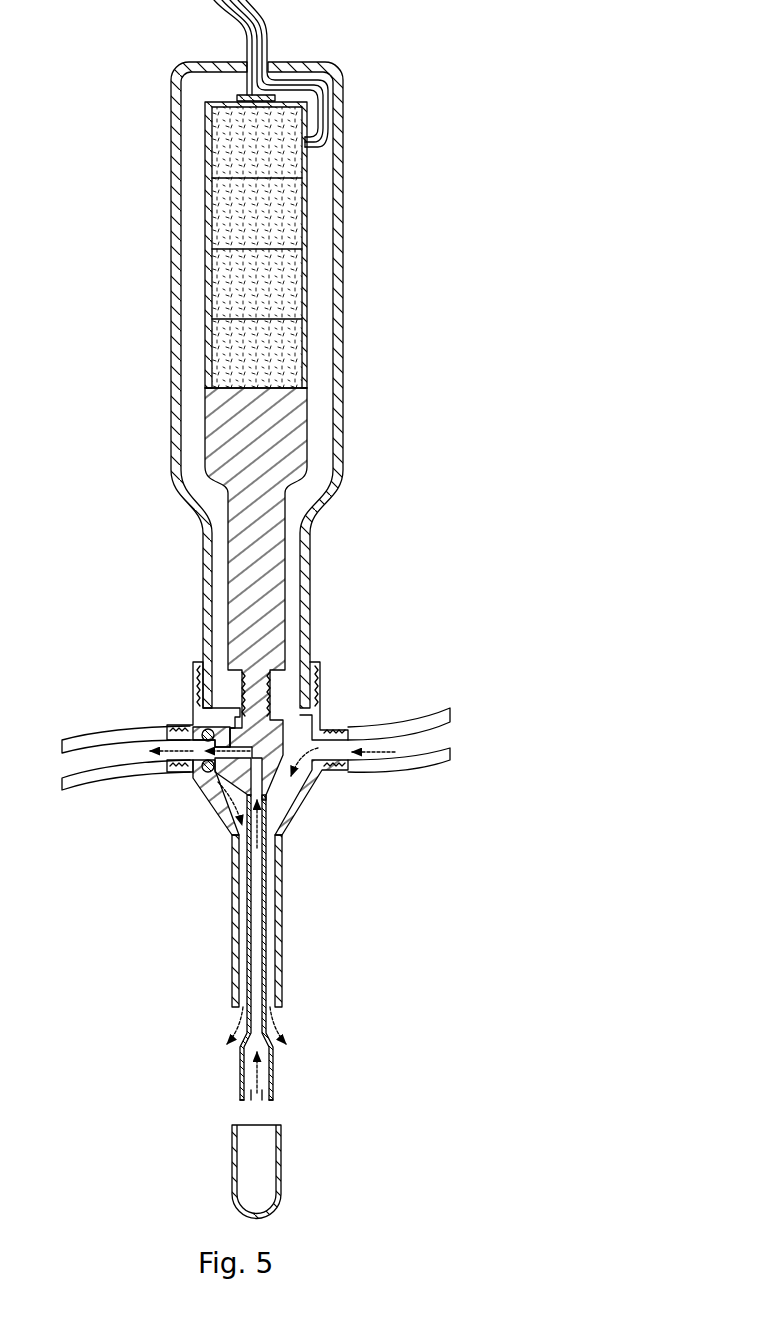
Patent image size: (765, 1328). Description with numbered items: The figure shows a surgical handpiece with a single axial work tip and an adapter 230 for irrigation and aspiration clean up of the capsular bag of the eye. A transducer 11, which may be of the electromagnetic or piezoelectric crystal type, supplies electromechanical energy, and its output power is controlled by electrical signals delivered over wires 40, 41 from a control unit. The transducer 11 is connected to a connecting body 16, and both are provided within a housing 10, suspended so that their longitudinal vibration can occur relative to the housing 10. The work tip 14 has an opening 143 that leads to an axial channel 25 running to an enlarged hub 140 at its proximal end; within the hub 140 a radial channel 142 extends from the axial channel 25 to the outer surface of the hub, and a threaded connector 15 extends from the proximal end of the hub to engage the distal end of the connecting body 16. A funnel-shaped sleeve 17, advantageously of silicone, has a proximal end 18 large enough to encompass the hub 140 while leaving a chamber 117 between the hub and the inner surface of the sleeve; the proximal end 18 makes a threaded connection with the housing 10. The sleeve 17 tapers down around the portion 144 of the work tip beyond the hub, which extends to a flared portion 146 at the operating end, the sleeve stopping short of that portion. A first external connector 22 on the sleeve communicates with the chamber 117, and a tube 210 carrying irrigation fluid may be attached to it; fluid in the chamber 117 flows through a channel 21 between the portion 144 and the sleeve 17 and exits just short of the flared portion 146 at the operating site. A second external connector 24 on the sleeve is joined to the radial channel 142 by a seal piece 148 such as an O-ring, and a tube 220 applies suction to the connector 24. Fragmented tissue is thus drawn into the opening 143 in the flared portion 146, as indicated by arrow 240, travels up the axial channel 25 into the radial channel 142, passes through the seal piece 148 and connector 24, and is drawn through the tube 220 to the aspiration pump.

The housing 10 is at (342, 337).
The transducer 11 is at (313, 212).
The work tip 14 is at (268, 978).
The threaded connector 15 is at (240, 677).
The connecting body 16 is at (285, 530).
The sleeve 17 is at (297, 825).
The proximal end of sleeve 18 is at (321, 690).
The channel 21 is at (243, 960).
The first external connector 22 is at (329, 783).
The second external connector 24 is at (164, 723).
The axial channel 25 is at (256, 923).
The wire 40 is at (268, 13).
The wire 41 is at (349, 80).
The chamber 117 is at (293, 744).
The enlarged hub 140 is at (207, 797).
The radial channel 142 is at (232, 752).
The opening 143 is at (248, 1102).
The portion of work tip 144 is at (266, 884).
The flared portion 146 is at (238, 1057).
The seal piece 148 is at (200, 775).
The tube 210 is at (420, 762).
The tube 220 is at (74, 738).
The adapter 230 is at (280, 1157).
The arrow 240 is at (260, 1087).